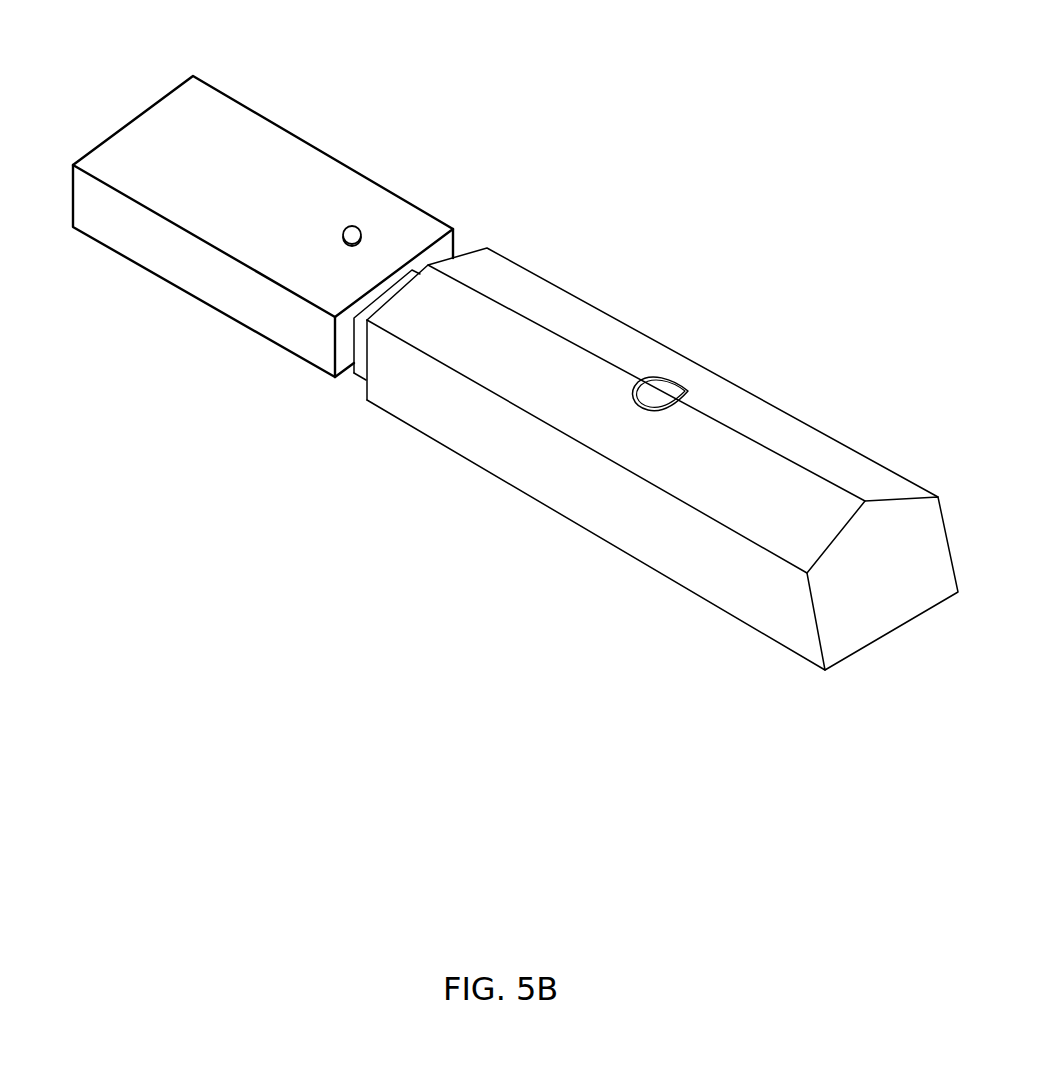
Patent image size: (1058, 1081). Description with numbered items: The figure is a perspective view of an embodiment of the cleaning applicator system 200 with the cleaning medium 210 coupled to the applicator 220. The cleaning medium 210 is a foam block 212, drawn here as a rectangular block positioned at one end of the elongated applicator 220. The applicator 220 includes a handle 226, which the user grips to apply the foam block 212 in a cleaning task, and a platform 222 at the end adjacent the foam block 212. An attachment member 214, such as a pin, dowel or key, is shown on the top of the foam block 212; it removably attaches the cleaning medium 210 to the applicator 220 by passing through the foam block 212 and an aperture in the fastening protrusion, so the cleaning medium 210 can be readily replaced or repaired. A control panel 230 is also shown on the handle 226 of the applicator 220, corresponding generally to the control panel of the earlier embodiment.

The cleaning applicator system 200 is at (346, 80).
The cleaning medium 210 is at (243, 372).
The foam block 212 is at (167, 95).
The attachment member 214 is at (359, 227).
The applicator 220 is at (738, 658).
The platform 222 is at (358, 380).
The handle 226 is at (583, 528).
The control panel 230 is at (697, 387).